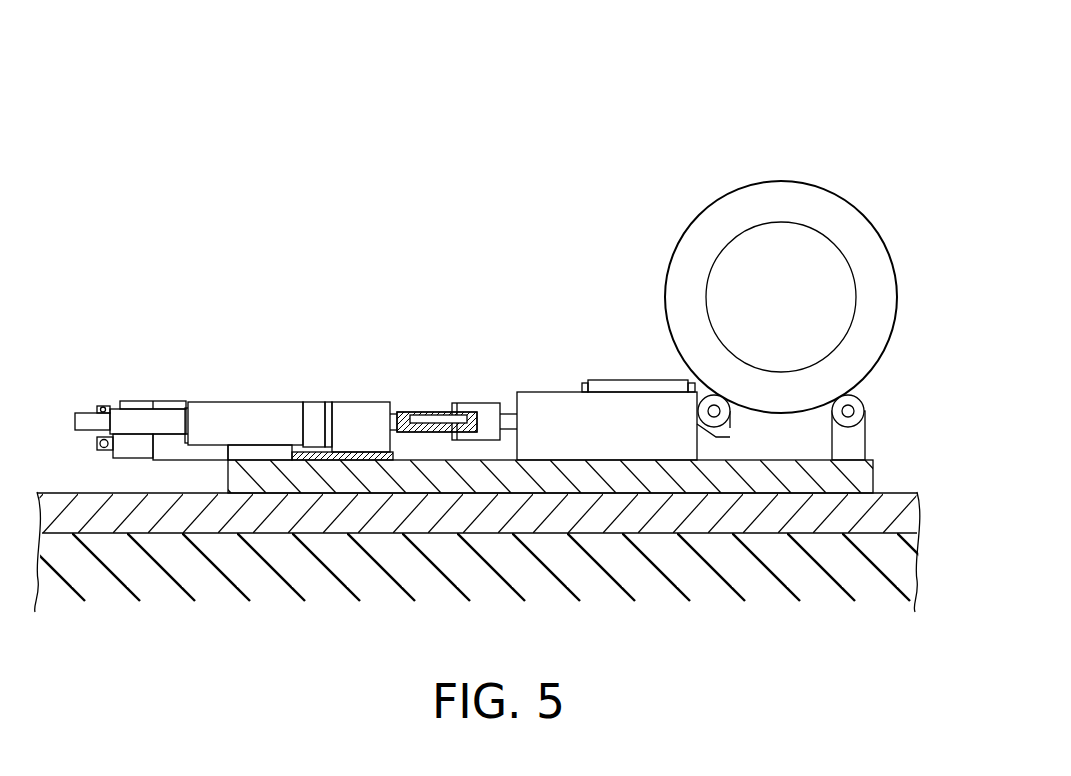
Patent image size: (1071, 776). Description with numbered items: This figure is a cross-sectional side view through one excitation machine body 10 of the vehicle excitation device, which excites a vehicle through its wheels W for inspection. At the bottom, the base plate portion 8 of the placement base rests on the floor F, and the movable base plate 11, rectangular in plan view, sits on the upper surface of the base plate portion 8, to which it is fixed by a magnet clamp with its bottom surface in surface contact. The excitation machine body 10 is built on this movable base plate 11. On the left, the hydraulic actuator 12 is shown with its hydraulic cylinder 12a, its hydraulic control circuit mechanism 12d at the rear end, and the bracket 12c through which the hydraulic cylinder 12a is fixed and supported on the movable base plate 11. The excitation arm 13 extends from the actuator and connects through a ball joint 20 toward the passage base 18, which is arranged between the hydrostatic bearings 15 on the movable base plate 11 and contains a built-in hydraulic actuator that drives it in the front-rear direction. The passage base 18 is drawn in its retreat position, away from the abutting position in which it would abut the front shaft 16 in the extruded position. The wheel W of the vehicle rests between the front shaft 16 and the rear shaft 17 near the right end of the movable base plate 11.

The excitation machine body 10 is at (510, 275).
The wheel W is at (820, 186).
The hydraulic actuator 12 is at (234, 357).
The hydraulic cylinder 12a is at (226, 408).
The bracket 12c is at (330, 400).
The hydraulic control circuit mechanism 12d is at (145, 400).
The excitation arm 13 is at (427, 410).
The ball joint 20 is at (478, 402).
The passage base 18 is at (545, 391).
The hydrostatic bearing 15 is at (633, 379).
The front shaft 16 is at (730, 418).
The rear shaft 17 is at (866, 410).
The movable base plate 11 is at (875, 477).
The base plate portion 8 is at (55, 493).
The floor F is at (908, 573).